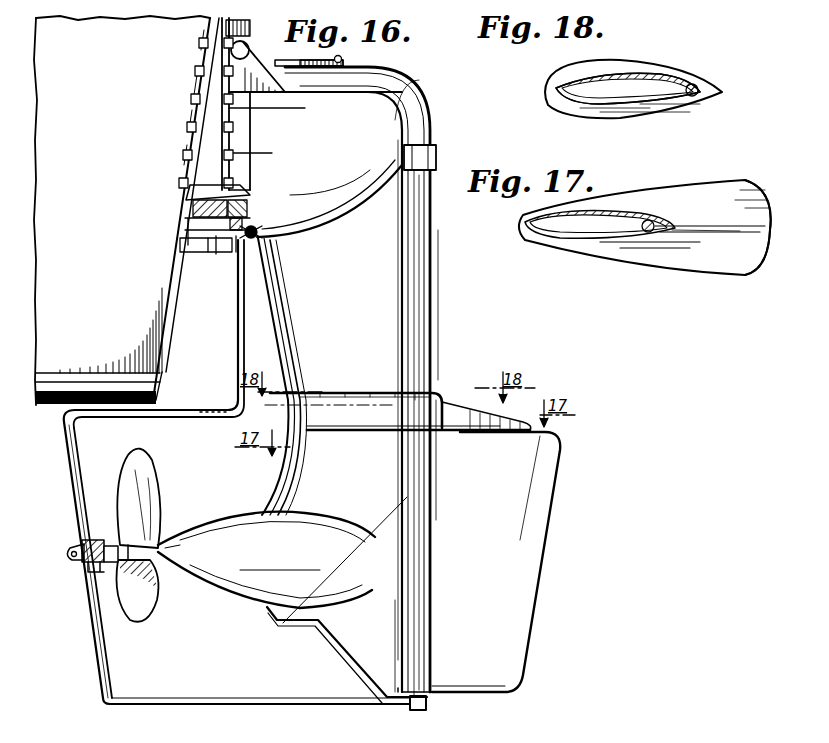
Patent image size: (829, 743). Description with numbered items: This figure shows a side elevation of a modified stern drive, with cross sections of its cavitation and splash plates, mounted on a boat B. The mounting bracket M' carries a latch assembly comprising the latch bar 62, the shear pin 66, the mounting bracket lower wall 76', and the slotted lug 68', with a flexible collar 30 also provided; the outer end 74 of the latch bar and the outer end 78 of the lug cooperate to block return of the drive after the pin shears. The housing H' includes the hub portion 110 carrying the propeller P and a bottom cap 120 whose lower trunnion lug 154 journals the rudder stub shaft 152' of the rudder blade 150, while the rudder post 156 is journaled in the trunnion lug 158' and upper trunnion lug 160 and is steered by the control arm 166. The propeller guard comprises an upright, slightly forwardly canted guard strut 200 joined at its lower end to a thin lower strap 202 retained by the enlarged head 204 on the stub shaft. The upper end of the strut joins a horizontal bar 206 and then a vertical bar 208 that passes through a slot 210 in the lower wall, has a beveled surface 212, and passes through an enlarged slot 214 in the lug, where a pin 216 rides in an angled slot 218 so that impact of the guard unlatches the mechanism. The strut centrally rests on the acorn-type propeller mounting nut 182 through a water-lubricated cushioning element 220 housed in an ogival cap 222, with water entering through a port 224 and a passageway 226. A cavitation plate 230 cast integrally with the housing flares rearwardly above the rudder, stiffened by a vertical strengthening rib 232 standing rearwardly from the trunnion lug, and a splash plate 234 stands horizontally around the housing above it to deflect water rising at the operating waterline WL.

In FIG. 16, the flexible collar 30 is at (200, 252).
In FIG. 16, the latch bar 62 is at (190, 195).
In FIG. 16, the shear pin 66 is at (218, 200).
In FIG. 16, the slotted lug 68' is at (214, 266).
In FIG. 16, the outer end of latch bar 74 is at (250, 205).
In FIG. 16, the mounting bracket lower wall 76' is at (231, 256).
In FIG. 16, the outer end of grooved lug 78 is at (232, 228).
In FIG. 16, the hub portion 110 is at (206, 527).
In FIG. 16, the bottom cap 120 is at (352, 652).
In FIG. 16, the rudder blade 150 is at (530, 584).
In FIG. 16, the rudder stub shaft 152' is at (438, 672).
In FIG. 16, the lower trunnion lug 154 is at (440, 702).
In FIG. 16, the rudder post 156 is at (432, 266).
In FIG. 18, the rudder post 156 is at (696, 85).
In FIG. 17, the rudder post 156 is at (650, 220).
In FIG. 16, the trunnion lug 158' is at (429, 395).
In FIG. 17, the trunnion lug 158' is at (682, 224).
In FIG. 16, the upper trunnion lug 160 is at (432, 145).
In FIG. 16, the control arm 166 is at (300, 60).
In FIG. 16, the propeller mounting nut 182 is at (110, 540).
In FIG. 16, the guard strut 200 is at (72, 486).
In FIG. 16, the lower strap 202 is at (216, 704).
In FIG. 16, the enlarged head 204 is at (412, 710).
In FIG. 16, the horizontal bar 206 is at (155, 417).
In FIG. 16, the vertical bar 208 is at (240, 325).
In FIG. 16, the slot 210 is at (270, 245).
In FIG. 16, the beveled surface 212 is at (254, 226).
In FIG. 16, the enlarged slot 214 is at (262, 228).
In FIG. 16, the pin 216 is at (268, 240).
In FIG. 16, the angled slot 218 is at (272, 248).
In FIG. 16, the cushioning element 220 is at (84, 568).
In FIG. 16, the ogival cap 222 is at (82, 545).
In FIG. 16, the port 224 is at (70, 555).
In FIG. 16, the passageway 226 is at (88, 568).
In FIG. 16, the cavitation plate 230 is at (380, 432).
In FIG. 17, the cavitation plate 230 is at (728, 186).
In FIG. 16, the strengthening rib 232 is at (478, 432).
In FIG. 17, the strengthening rib 232 is at (697, 250).
In FIG. 16, the splash plate 234 is at (320, 393).
In FIG. 18, the splash plate 234 is at (645, 63).
In FIG. 17, the splash plate 234 is at (600, 224).
In FIG. 16, the boat B is at (122, 210).
In FIG. 16, the screw propeller P is at (152, 465).
In FIG. 16, the mounting bracket M' is at (312, 104).
In FIG. 16, the housing H' is at (329, 246).
In FIG. 18, the housing H' is at (620, 90).
In FIG. 17, the housing H' is at (645, 227).
In FIG. 16, the operating waterline WL is at (368, 400).